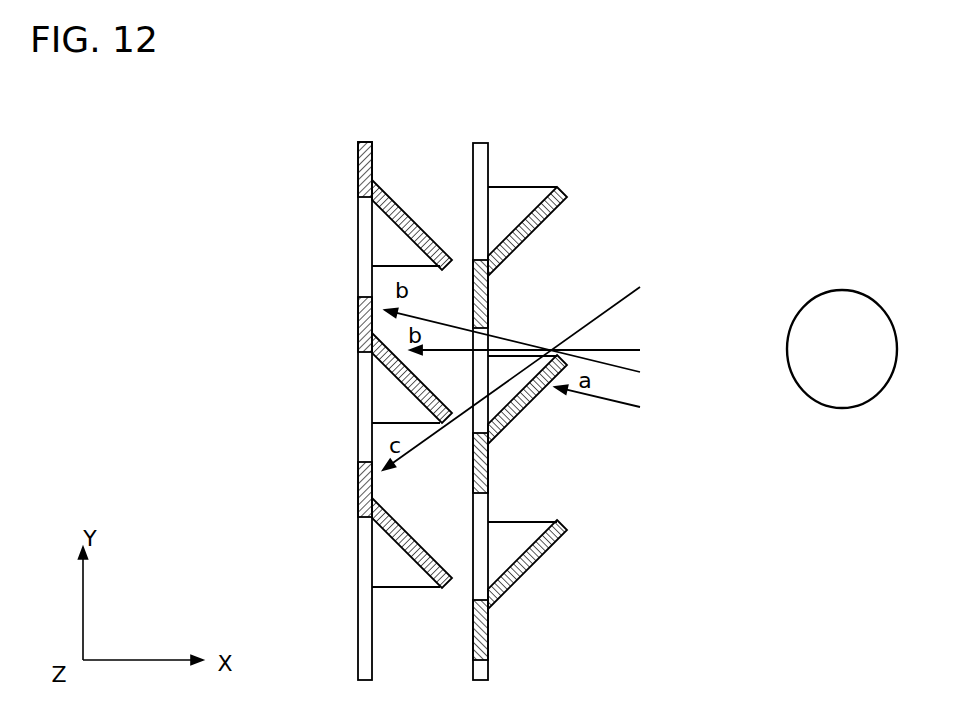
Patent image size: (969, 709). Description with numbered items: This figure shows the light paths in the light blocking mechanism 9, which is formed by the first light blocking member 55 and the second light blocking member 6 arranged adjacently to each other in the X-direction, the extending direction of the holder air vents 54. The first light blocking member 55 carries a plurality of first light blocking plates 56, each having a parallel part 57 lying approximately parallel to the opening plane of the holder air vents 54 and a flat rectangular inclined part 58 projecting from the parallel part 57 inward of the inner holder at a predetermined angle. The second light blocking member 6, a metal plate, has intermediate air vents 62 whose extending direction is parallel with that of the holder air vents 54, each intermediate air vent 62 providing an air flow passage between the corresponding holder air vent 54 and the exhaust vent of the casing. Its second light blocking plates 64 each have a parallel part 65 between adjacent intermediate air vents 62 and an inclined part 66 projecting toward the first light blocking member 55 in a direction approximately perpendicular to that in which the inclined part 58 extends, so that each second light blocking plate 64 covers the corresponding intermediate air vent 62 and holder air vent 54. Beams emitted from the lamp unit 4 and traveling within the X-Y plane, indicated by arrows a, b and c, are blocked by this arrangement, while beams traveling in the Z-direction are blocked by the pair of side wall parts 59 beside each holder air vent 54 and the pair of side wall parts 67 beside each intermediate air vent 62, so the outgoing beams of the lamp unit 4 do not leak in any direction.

The lamp unit 4 is at (827, 302).
The second light blocking member 6 is at (342, 140).
The light blocking mechanism 9 is at (545, 80).
The holder air vent 54 is at (480, 362).
The first light blocking member 55 is at (502, 136).
The first light blocking plate 56 is at (557, 423).
The parallel part 57 is at (522, 460).
The inclined part 58 is at (552, 218).
The side wall part 59 is at (520, 198).
The intermediate air vent 62 is at (362, 285).
The second light blocking plate 64 is at (346, 365).
The parallel part 65 is at (318, 255).
The inclined part 66 is at (372, 222).
The side wall part 67 is at (395, 242).